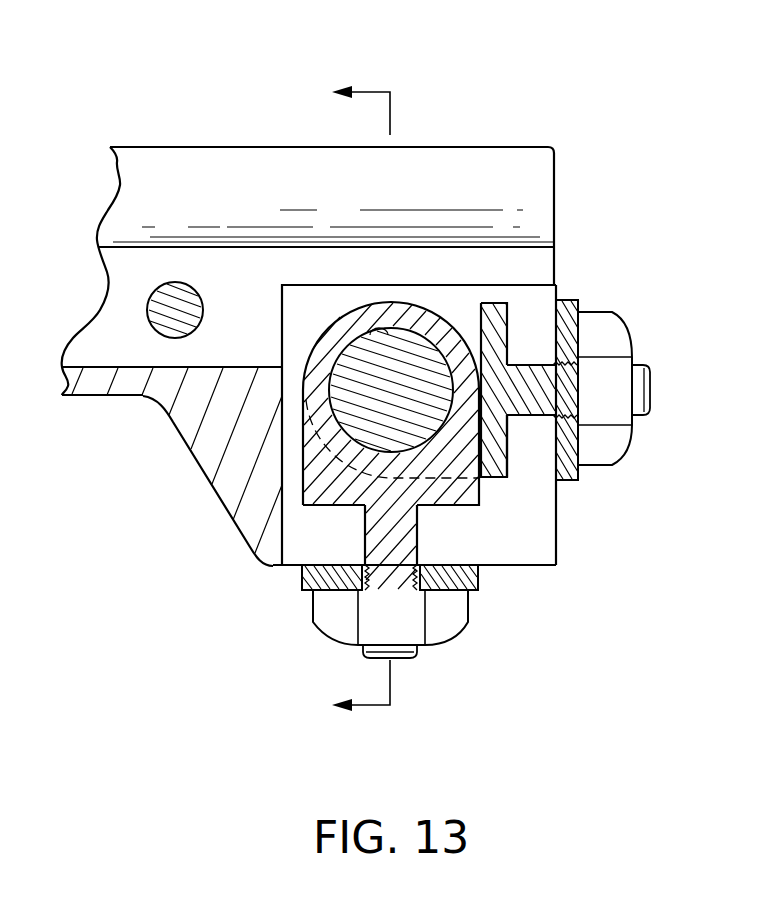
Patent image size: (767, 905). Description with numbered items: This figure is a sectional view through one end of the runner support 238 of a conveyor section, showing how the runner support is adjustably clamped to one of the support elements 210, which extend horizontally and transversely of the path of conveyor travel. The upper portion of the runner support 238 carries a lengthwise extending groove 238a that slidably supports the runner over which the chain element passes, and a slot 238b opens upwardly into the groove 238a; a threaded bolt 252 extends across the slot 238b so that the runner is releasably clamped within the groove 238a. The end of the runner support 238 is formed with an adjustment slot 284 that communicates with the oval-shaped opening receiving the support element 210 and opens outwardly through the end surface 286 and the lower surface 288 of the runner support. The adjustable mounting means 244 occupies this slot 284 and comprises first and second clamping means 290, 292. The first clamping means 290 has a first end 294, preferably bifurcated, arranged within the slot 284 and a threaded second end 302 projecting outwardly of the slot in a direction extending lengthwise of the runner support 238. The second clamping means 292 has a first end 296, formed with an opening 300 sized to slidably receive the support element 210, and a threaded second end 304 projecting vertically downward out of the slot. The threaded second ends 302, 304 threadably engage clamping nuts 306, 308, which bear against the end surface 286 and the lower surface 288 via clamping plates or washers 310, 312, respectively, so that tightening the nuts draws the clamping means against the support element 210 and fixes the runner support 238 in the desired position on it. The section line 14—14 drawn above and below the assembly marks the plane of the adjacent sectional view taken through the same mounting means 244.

The section line 14- 14 is at (381, 396).
The support element 210 is at (340, 408).
The runner support 238 is at (182, 450).
The groove 238a is at (523, 247).
The slot 238b is at (180, 365).
The adjustable mounting means 244 is at (581, 561).
The threaded bolt 252 is at (196, 290).
The adjustment slot 284 is at (272, 534).
The end surface 286 is at (557, 518).
The lower surface 288 is at (525, 566).
The first clamping means 290 is at (515, 321).
The second clamping means 292 is at (328, 520).
The first end 294 is at (508, 460).
The first end 296 is at (440, 506).
The opening 300 is at (382, 331).
The threaded second end 302 is at (533, 363).
The threaded second end 304 is at (362, 540).
The clamping nut 306 is at (632, 338).
The clamping nut 308 is at (445, 642).
The clamping plate or washer 310 is at (580, 481).
The clamping plate or washer 312 is at (480, 588).